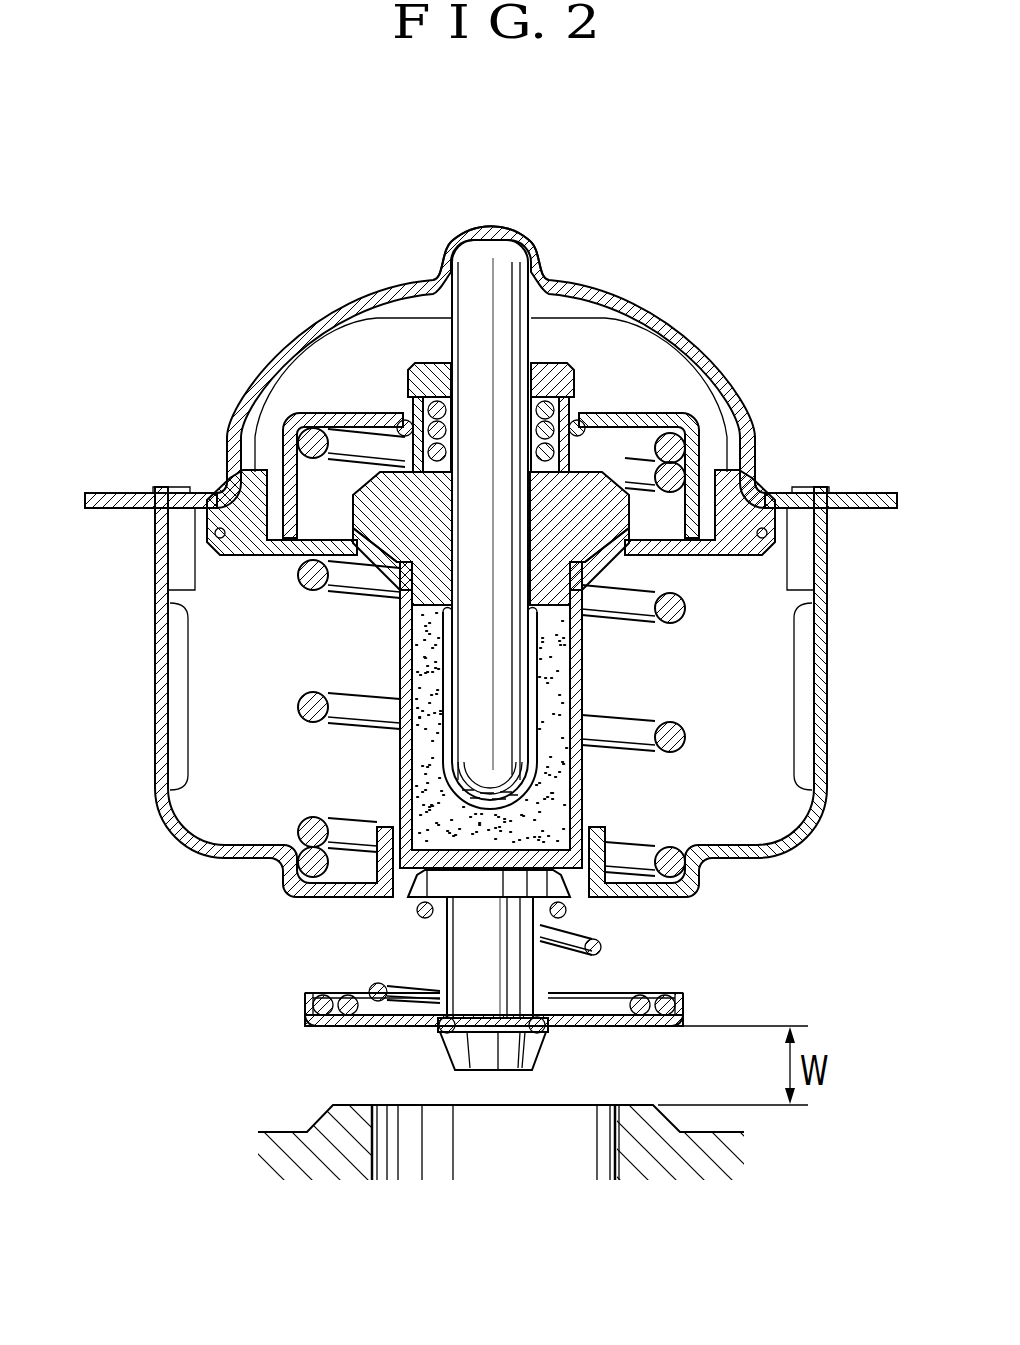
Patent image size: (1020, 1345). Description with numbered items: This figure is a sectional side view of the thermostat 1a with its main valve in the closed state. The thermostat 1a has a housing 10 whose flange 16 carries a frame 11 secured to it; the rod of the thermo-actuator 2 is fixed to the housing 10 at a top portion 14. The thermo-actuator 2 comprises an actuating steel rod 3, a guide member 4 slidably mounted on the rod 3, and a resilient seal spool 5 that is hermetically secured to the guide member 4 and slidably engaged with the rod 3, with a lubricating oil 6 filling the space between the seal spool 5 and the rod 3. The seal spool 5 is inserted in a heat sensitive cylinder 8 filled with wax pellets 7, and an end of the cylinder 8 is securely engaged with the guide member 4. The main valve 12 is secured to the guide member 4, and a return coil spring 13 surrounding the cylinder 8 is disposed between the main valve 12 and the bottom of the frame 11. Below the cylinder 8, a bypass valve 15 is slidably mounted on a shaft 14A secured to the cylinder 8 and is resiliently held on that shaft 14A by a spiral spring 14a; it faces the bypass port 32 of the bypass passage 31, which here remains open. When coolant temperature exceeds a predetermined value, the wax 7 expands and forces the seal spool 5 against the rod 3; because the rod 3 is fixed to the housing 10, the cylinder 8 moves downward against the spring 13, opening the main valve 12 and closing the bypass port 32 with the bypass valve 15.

The thermostat 1a is at (748, 360).
The thermo-actuator 2 is at (380, 627).
The actuating steel rod 3 is at (495, 283).
The guide member 4 is at (388, 500).
The resilient seal spool 5 is at (440, 745).
The lubricating oil 6 is at (445, 800).
The wax pellets 7 is at (556, 785).
The heat sensitive cylinder 8 is at (582, 662).
The housing 10 is at (338, 312).
The frame 11 is at (153, 705).
The main valve 12 is at (243, 520).
The return coil spring 13 is at (310, 705).
The top portion 14 is at (465, 237).
The shaft 14A is at (470, 955).
The spiral spring 14a is at (600, 940).
The bypass valve 15 is at (690, 1000).
The flange 16 is at (873, 492).
The bypass passage 31 is at (470, 1168).
The bypass port 32 is at (572, 1104).